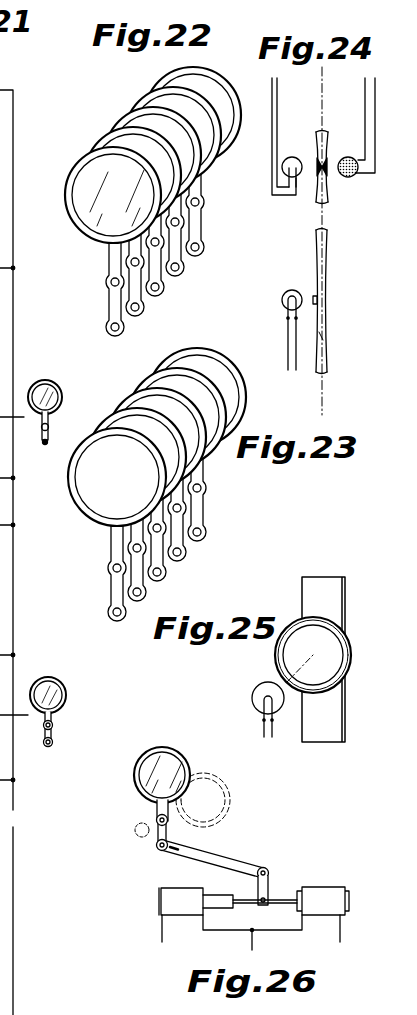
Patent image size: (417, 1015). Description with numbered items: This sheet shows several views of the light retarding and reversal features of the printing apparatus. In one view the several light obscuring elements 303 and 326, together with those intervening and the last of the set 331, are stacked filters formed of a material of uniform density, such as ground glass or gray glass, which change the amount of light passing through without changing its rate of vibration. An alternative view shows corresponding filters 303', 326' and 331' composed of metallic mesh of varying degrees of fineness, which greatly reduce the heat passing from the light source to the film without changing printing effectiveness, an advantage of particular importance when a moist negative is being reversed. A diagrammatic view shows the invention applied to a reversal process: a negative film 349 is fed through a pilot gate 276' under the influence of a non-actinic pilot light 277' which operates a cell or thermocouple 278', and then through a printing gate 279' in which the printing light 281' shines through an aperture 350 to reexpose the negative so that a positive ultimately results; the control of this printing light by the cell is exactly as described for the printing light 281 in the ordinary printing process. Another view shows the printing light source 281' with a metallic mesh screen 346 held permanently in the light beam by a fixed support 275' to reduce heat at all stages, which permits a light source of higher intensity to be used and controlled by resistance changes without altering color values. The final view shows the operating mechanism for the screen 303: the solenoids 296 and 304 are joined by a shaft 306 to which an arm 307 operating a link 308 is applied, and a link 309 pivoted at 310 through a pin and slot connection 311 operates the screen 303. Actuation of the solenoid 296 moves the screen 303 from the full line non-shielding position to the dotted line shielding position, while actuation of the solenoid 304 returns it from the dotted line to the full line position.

In FIG. 21, the screen 303 is at (60, 393).
In FIG. 22, the screen 303 is at (103, 231).
In FIG. 26, the screen 303 is at (162, 760).
In FIG. 21, the light obscuring element 326 is at (59, 692).
In FIG. 22, the light obscuring element 326 is at (126, 198).
In FIG. 22, the lens disc 331 is at (172, 156).
In FIG. 23, the filter 303' is at (96, 524).
In FIG. 23, the filter 326' is at (131, 485).
In FIG. 23, the lens disc (reverse side) 331' is at (197, 428).
In FIG. 24, the negative film 349 is at (323, 92).
In FIG. 24, the non-actinic pilot light 277' is at (295, 136).
In FIG. 24, the pilot gate 276' is at (339, 154).
In FIG. 24, the cell or thermocouple 278' is at (356, 150).
In FIG. 24, the printing gate 279' is at (344, 301).
In FIG. 24, the aperture 350 is at (313, 300).
In FIG. 24, the printing light 281 is at (266, 330).
In FIG. 25, the bar 275' is at (323, 641).
In FIG. 25, the metallic mesh screen 346 is at (276, 657).
In FIG. 25, the printing light source 281' is at (243, 709).
In FIG. 26, the link 309 is at (157, 810).
In FIG. 26, the pivot 310 is at (156, 821).
In FIG. 26, the pin and slot connection 311 is at (158, 849).
In FIG. 26, the link 308 is at (222, 858).
In FIG. 26, the arm 307 is at (257, 890).
In FIG. 26, the shaft 306 is at (277, 900).
In FIG. 26, the solenoid 304 is at (325, 895).
In FIG. 26, the solenoid 296 is at (160, 897).